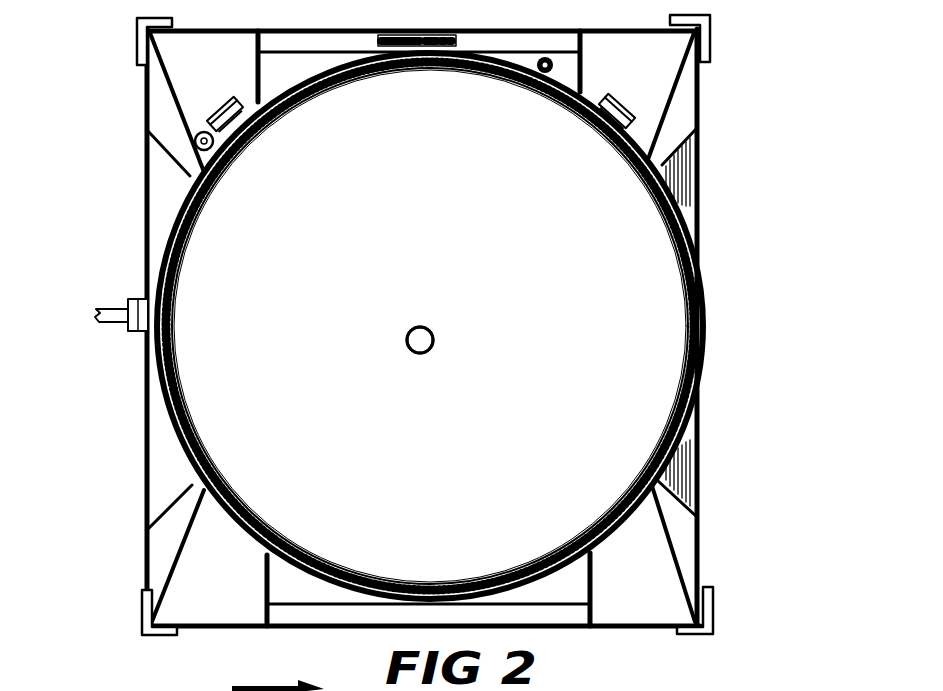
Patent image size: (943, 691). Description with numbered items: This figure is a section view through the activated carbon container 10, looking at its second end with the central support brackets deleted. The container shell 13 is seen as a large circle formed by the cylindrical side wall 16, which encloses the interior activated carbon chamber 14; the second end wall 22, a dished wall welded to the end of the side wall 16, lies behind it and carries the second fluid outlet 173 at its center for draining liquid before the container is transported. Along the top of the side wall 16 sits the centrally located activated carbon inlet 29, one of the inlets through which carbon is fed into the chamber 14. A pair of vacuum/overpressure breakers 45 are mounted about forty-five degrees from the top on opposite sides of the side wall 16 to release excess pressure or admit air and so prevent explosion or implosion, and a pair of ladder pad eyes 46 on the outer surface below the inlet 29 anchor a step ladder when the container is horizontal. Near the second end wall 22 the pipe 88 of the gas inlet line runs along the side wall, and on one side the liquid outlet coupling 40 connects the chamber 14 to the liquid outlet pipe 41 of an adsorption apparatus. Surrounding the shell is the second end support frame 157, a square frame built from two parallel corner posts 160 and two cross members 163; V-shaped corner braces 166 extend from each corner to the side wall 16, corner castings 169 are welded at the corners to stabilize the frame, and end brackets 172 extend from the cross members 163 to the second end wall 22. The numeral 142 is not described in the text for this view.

The container 10 is at (792, 80).
The container shell 13 is at (710, 292).
The activated carbon chamber 14 is at (224, 402).
The cylindrical side wall 16 is at (682, 330).
The second end wall 22 is at (426, 307).
The activated carbon inlet 29 is at (432, 32).
The liquid outlet coupling 40 is at (135, 333).
The liquid outlet pipe 41 is at (113, 310).
The vacuum/overpressure breaker 45 is at (215, 112).
The ladder pad eye 46 is at (214, 160).
The pipe 88 is at (568, 80).
The arrow 142 is at (210, 690).
The second end support frame 157 is at (343, 18).
The corner post 160 is at (150, 452).
The cross member 163 is at (478, 30).
The V-shaped corner brace 166 is at (148, 118).
The corner casting 169 is at (138, 21).
The end bracket 172 is at (572, 105).
The second fluid outlet 173 is at (433, 330).